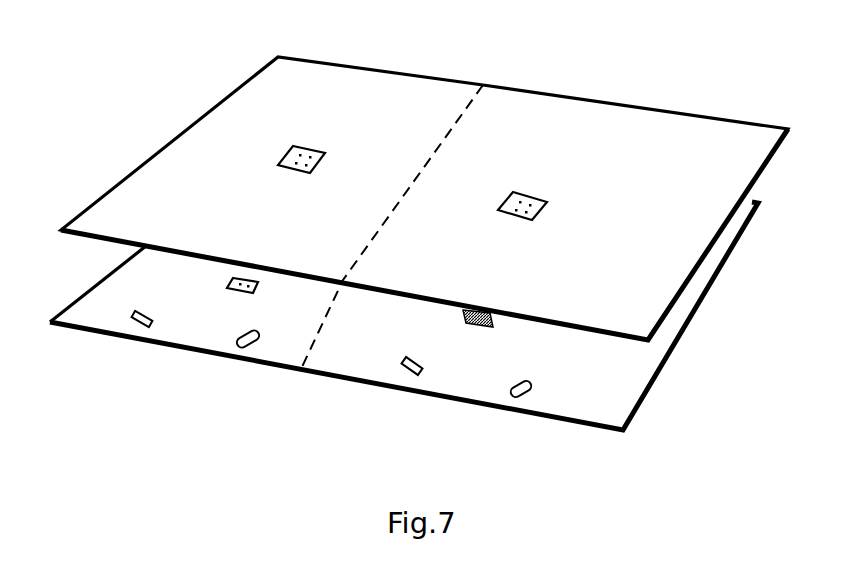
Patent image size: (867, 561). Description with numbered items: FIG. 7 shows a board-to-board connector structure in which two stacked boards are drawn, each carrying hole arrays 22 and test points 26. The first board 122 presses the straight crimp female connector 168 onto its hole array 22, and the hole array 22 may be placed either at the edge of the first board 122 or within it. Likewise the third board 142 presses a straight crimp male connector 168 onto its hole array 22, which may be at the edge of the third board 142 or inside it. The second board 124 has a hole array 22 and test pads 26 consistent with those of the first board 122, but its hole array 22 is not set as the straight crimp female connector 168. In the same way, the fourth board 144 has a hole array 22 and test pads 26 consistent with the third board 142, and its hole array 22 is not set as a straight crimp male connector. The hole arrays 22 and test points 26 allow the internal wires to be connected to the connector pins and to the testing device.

The hole array 22 is at (258, 278).
The test point 26 is at (332, 373).
The first board 122 is at (688, 291).
The second board 124 is at (92, 315).
The third board 142 is at (598, 152).
The fourth board 144 is at (205, 160).
The straight crimp connector 168 is at (497, 320).